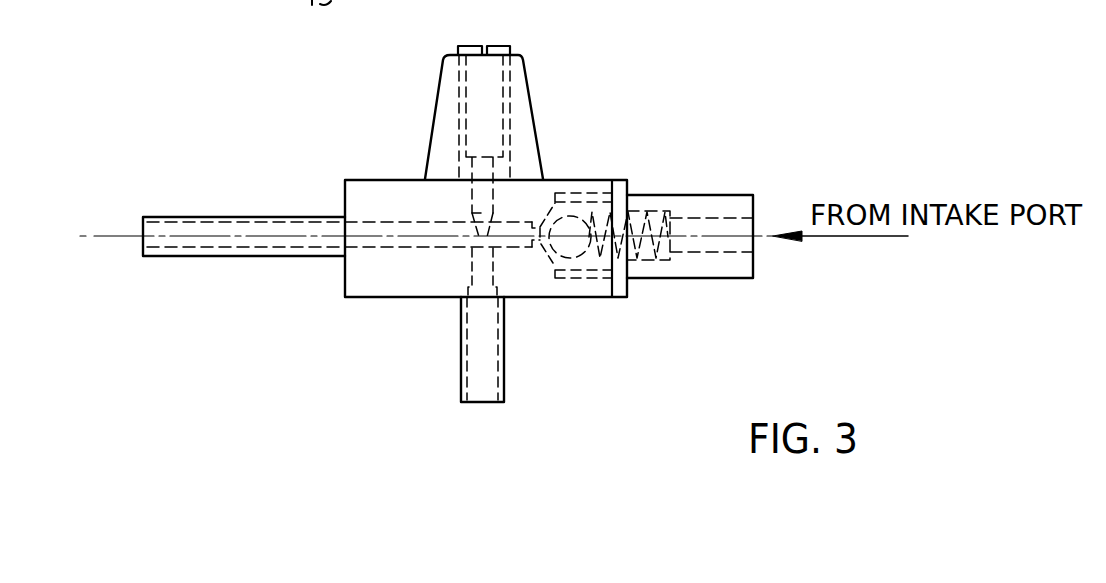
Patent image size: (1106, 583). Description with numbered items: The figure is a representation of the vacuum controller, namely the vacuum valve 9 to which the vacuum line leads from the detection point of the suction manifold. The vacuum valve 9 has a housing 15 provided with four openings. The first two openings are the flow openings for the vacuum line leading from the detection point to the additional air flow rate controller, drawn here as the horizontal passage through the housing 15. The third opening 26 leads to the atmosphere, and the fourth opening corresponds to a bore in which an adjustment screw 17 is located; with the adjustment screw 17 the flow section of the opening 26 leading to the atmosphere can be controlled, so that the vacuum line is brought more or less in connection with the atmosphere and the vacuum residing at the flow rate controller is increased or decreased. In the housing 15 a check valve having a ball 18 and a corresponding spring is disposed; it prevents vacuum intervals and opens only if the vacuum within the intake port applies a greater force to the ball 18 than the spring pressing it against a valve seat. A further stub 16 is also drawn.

The vacuum valve 9 is at (517, 117).
The housing 15 is at (385, 203).
The outlet stub 16 is at (502, 365).
The adjustment screw 17 is at (498, 46).
The ball 18 is at (589, 203).
The third opening 26 is at (478, 250).